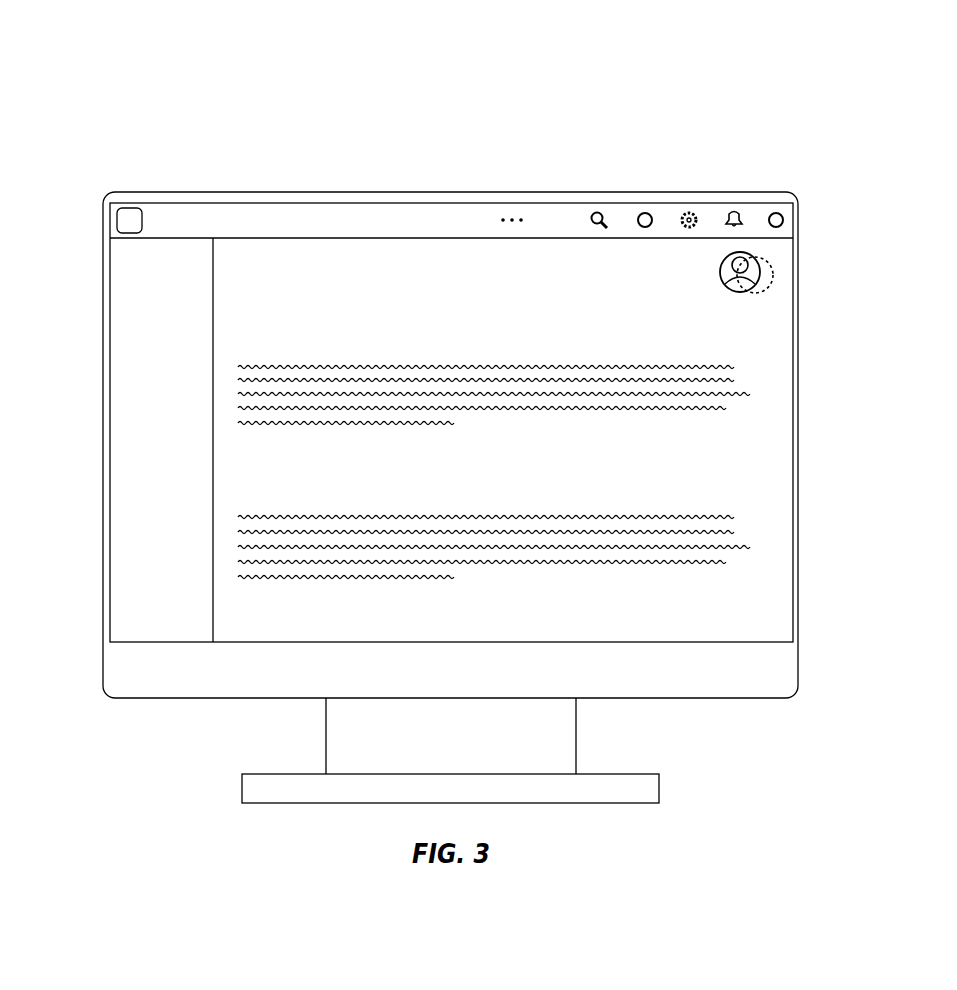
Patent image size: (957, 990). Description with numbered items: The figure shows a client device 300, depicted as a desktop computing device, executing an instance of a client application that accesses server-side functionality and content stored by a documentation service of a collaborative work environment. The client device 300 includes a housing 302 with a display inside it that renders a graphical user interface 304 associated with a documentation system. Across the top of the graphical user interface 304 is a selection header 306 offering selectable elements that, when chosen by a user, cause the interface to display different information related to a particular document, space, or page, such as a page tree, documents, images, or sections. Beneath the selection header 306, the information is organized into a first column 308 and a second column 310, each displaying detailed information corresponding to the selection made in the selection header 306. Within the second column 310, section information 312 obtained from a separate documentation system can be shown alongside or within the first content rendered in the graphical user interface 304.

The client device 300 is at (116, 64).
The housing 302 is at (800, 227).
The graphical user interface 304 is at (770, 318).
The selection header 306 is at (95, 203).
The first column 308 is at (213, 182).
The second column 310 is at (790, 182).
The section information 312 is at (732, 483).